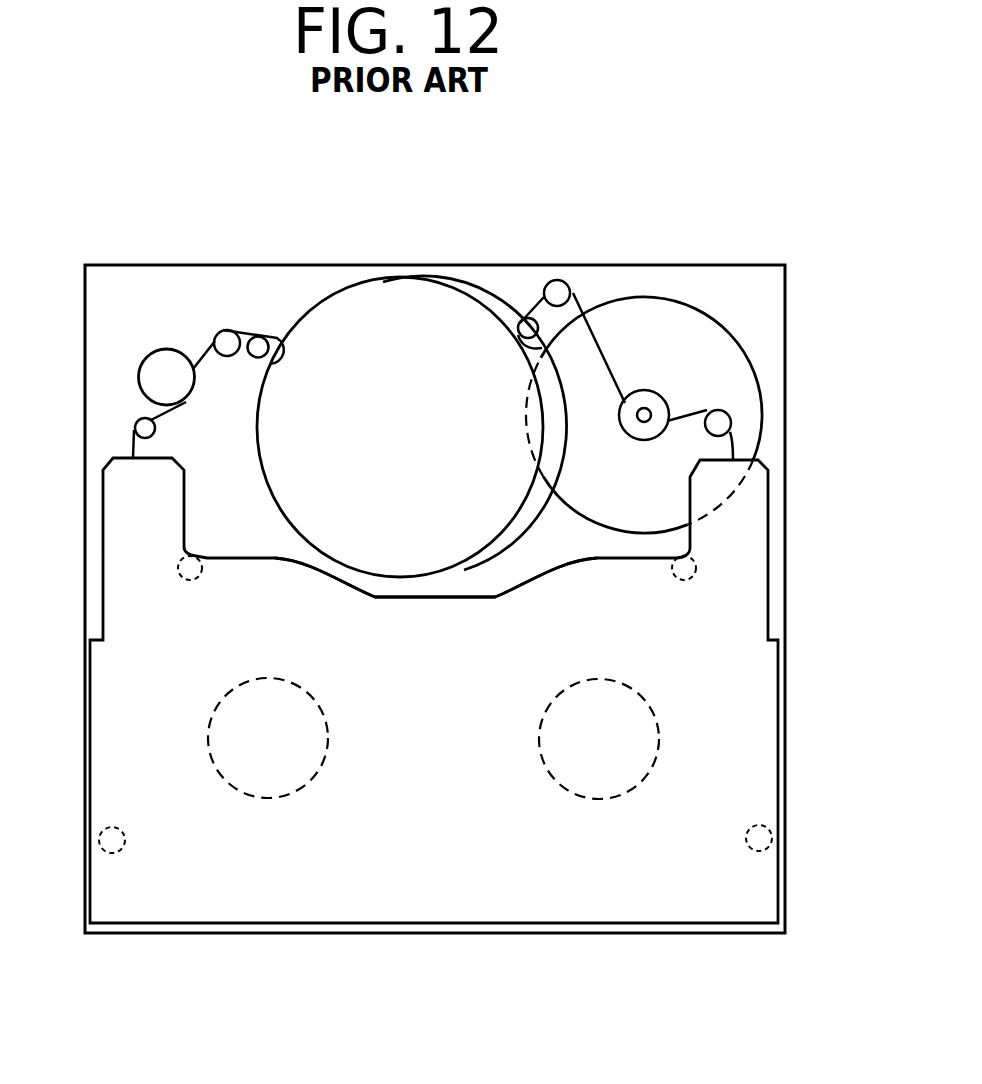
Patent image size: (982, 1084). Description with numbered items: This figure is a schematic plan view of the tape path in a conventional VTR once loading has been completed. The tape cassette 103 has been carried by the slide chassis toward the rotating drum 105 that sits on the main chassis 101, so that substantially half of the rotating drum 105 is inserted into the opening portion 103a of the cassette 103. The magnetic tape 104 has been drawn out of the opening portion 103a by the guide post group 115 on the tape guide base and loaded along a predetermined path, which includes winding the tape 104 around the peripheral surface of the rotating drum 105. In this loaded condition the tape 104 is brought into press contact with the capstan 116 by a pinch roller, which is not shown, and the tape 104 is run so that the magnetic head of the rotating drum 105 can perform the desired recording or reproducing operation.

The main chassis 101 is at (772, 318).
The tape cassette 103 is at (630, 904).
The opening portion 103a is at (443, 594).
The magnetic tape 104 is at (251, 328).
The rotating drum 105 is at (405, 313).
The guide post group 115 is at (224, 337).
The capstan 116 is at (646, 410).